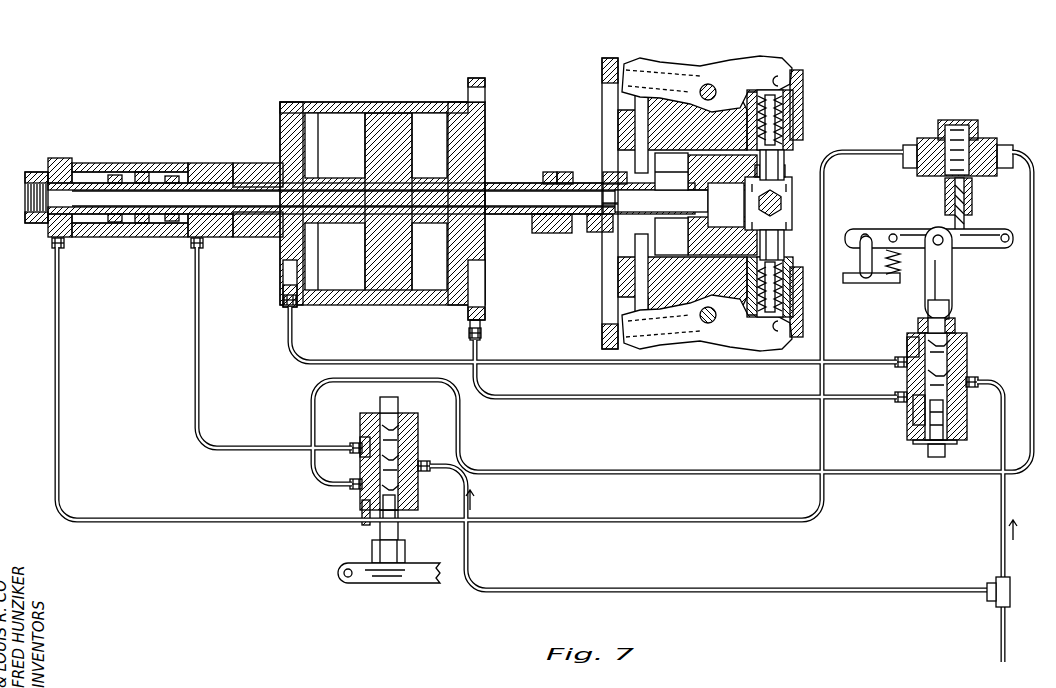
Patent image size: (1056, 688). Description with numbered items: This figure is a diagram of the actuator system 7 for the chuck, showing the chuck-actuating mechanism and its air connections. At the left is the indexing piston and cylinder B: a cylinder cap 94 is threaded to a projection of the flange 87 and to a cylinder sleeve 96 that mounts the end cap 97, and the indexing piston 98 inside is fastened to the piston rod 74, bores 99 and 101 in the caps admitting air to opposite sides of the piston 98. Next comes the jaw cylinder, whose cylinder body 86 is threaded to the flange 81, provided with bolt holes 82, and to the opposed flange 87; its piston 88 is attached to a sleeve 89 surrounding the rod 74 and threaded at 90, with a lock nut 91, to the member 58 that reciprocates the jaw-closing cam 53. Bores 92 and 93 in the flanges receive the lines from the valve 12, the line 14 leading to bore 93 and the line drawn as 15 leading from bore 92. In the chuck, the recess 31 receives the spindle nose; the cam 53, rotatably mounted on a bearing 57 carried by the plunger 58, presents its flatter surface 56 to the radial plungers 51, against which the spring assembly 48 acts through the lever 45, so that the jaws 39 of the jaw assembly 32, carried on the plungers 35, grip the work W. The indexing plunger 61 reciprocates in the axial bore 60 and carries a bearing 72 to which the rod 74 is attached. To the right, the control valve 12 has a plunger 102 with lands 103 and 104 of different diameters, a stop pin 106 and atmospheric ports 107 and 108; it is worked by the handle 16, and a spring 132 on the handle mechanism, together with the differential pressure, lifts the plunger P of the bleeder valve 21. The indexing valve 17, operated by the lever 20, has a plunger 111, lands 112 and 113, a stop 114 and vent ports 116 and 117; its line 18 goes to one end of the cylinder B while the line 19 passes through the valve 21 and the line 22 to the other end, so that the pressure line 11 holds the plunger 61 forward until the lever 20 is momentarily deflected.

The fluid motor 7 is at (392, 104).
The pressure line 11 is at (1004, 511).
The jaw-opening and closing control valve 12 is at (970, 355).
The line 14 is at (645, 364).
The pipe 15 is at (619, 399).
The manual lever 16 is at (984, 253).
The indexing control valve 17 is at (352, 500).
The line 18 is at (211, 452).
The line 19 is at (562, 469).
The lever 20 is at (412, 582).
The automatic bleeder valve 21 is at (996, 130).
The line 22 is at (700, 523).
The recess 31 is at (602, 132).
The chuck jaw assembly 32 is at (792, 164).
The plungers 35 is at (801, 82).
The jaws 39 is at (786, 174).
The clutch lever 45 is at (740, 66).
The spring assembly 48 is at (599, 78).
The radial plungers 51 is at (601, 99).
The jaw-closing cam 53 is at (604, 266).
The flatter cam surface 56 is at (671, 179).
The bearing 57 is at (594, 234).
The plunger 58 is at (550, 233).
The axial bore 60 is at (671, 170).
The indexing plunger 61 is at (688, 248).
The bearing 72 is at (712, 203).
The piston rod 74 is at (677, 209).
The flange 81 is at (485, 111).
The bolt holes 82 is at (486, 86).
The cylinder body 86 is at (349, 102).
The cylinder head flange 87 is at (278, 126).
The piston 88 is at (366, 131).
The sleeve 89 is at (500, 177).
The threaded joint 90 is at (566, 172).
The lock nut 91 is at (542, 172).
The bore 92 is at (485, 290).
The bore 93 is at (308, 276).
The cylinder cap 94 is at (198, 163).
The cylinder sleeve 96 is at (103, 163).
The end cap 97 is at (70, 158).
The indexing piston 98 is at (106, 238).
The bore 99 is at (190, 236).
The bore 101 is at (50, 231).
The plunger 102 is at (960, 306).
The large land 103 is at (960, 334).
The small land 104 is at (907, 427).
The pin 106 is at (957, 444).
The atmospheric port 107 is at (913, 412).
The atmospheric port 108 is at (903, 345).
The plunger 111 is at (378, 538).
The large land 112 is at (418, 491).
The small land 113 is at (400, 439).
The stop 114 is at (406, 404).
The vent port 116 is at (358, 433).
The vent port 117 is at (361, 526).
The spring 132 is at (904, 276).
The indexing piston and cylinder B is at (140, 167).
The plunger P is at (968, 212).
The work W is at (791, 198).